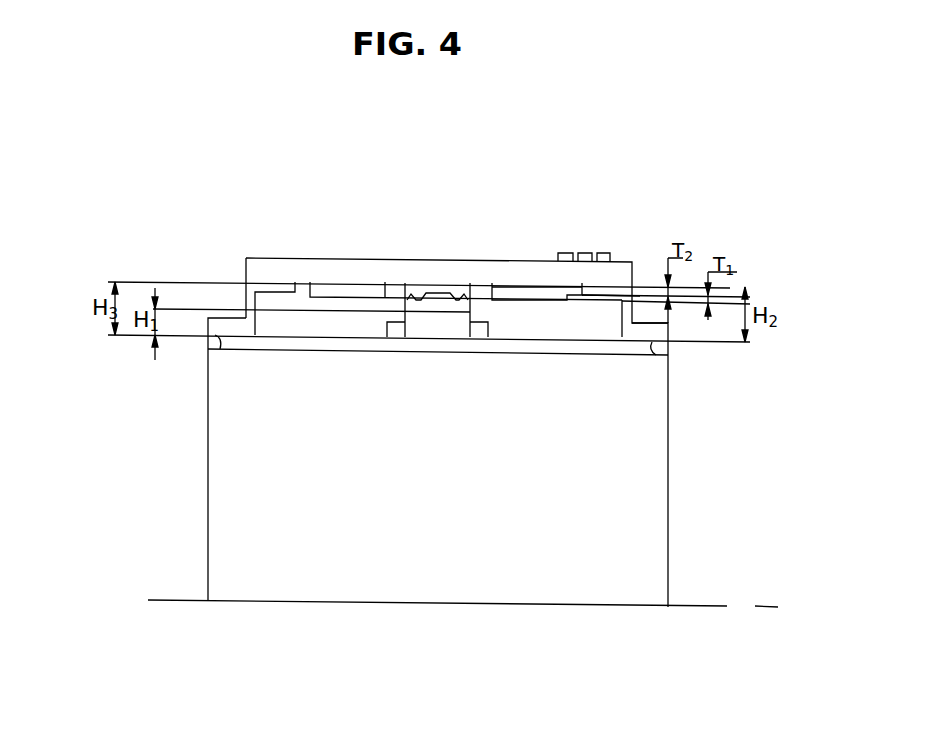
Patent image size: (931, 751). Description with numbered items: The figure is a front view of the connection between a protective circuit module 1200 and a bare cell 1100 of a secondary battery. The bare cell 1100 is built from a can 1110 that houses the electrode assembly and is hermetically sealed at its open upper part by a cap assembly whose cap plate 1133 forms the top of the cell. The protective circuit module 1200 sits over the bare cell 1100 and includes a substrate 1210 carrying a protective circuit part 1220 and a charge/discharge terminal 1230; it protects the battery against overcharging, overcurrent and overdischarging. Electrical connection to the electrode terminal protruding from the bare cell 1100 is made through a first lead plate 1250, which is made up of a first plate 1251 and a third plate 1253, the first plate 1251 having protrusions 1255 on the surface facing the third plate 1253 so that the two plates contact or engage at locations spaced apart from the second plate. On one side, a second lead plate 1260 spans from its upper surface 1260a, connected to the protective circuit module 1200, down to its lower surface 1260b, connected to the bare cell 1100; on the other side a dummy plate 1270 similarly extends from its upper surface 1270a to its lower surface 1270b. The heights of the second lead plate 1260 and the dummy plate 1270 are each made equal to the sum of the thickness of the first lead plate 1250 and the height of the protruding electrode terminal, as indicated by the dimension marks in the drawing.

The bare cell 1100 is at (675, 491).
The can 1110 is at (220, 466).
The cap plate 1133 is at (250, 350).
The protective circuit module 1200 is at (132, 222).
The substrate 1210 is at (531, 270).
The protective circuit part 1220 is at (343, 283).
The charge/discharge terminal 1230 is at (565, 252).
The first lead plate 1250 is at (510, 172).
The first plate 1251 is at (438, 283).
The third plate 1253 is at (410, 303).
The protrusions 1255 is at (460, 297).
The second lead plate 1260 is at (647, 317).
The upper surface of the second lead plate 1260a is at (603, 285).
The lower surface of the second lead plate 1260b is at (672, 357).
The dummy plate 1270 is at (220, 322).
The upper surface of the dummy plate 1270a is at (273, 275).
The lower surface of the dummy plate 1270b is at (210, 350).